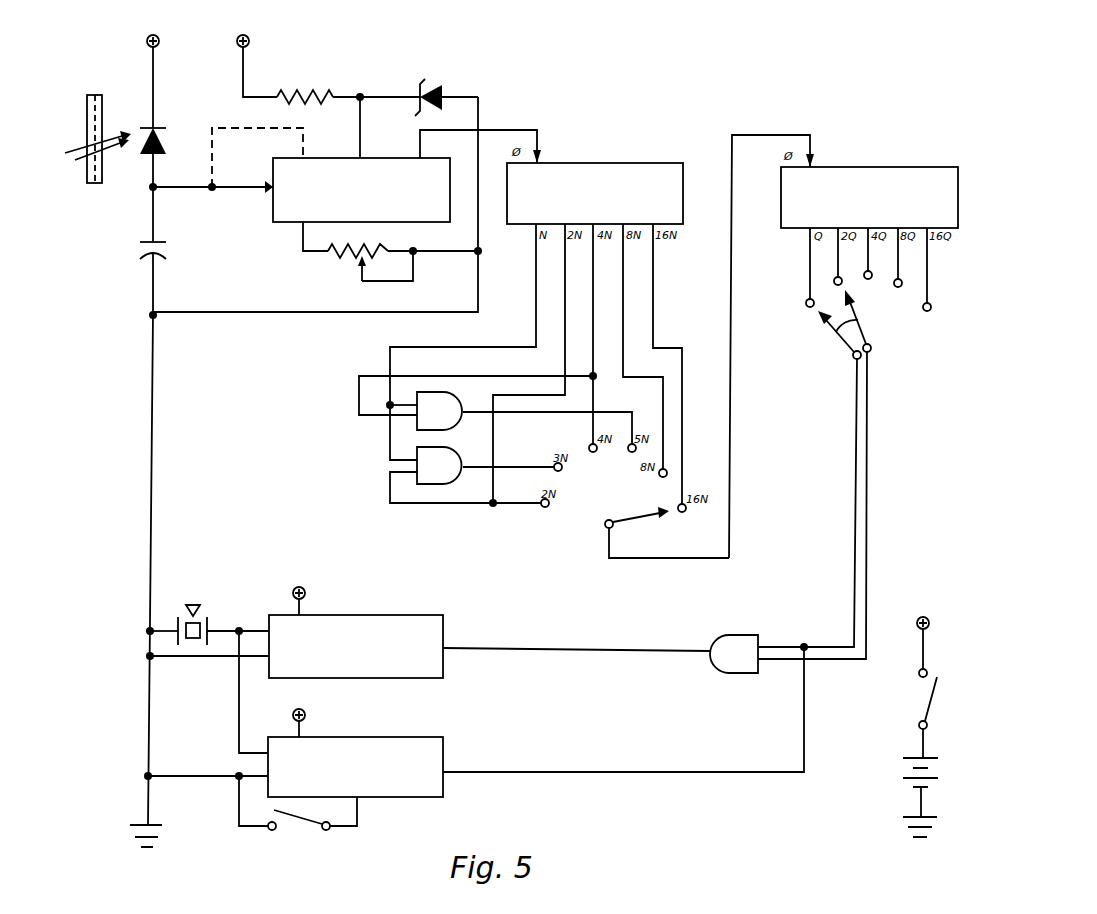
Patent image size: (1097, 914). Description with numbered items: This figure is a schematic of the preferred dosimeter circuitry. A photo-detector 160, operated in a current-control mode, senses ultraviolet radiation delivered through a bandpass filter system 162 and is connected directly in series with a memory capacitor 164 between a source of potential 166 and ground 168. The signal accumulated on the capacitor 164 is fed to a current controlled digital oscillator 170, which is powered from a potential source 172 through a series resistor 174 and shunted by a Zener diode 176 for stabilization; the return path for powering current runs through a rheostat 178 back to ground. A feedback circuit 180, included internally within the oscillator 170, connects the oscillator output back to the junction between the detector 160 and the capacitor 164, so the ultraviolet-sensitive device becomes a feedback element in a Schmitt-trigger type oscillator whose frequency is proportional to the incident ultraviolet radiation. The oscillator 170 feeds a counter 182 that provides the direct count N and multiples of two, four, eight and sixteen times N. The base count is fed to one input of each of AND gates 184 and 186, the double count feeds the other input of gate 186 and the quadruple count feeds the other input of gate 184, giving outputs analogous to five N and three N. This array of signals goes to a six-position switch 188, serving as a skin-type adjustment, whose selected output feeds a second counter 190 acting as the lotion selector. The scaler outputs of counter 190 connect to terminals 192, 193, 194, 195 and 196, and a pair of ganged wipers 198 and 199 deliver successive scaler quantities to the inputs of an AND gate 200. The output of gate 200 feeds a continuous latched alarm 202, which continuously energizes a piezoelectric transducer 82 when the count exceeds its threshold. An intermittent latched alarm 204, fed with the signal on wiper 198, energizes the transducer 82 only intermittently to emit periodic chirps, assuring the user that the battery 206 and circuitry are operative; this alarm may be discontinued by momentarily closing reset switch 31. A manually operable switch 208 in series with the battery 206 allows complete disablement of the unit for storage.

The source of potential 166 is at (153, 34).
The potential source 172 is at (243, 34).
The series resistor 174 is at (305, 90).
The Zener diode 176 is at (432, 82).
The bandpass filter system 162 is at (102, 90).
The photo-detector 160 is at (164, 128).
The memory capacitor 164 is at (147, 259).
The feedback circuit 180 is at (268, 124).
The current controlled digital oscillator 170 is at (274, 220).
The rheostat 178 is at (352, 262).
The counter 182 is at (590, 163).
The second counter 190 is at (851, 167).
The terminal 192 is at (806, 304).
The terminal 193 is at (834, 282).
The terminal 194 is at (864, 273).
The terminal 195 is at (902, 282).
The terminal 196 is at (930, 304).
The wiper 198 is at (843, 335).
The wiper 199 is at (858, 326).
The AND gate 184 is at (427, 431).
The AND gate 186 is at (435, 485).
The six-position switch 188 is at (634, 527).
The piezoelectric transducer 82 is at (211, 620).
The continuous latched alarm 202 is at (369, 615).
The intermittent latched alarm 204 is at (354, 737).
The AND gate 200 is at (730, 634).
The reset switch 31 is at (297, 822).
The ground 168 is at (140, 822).
The manually operable switch 208 is at (925, 697).
The battery 206 is at (912, 788).